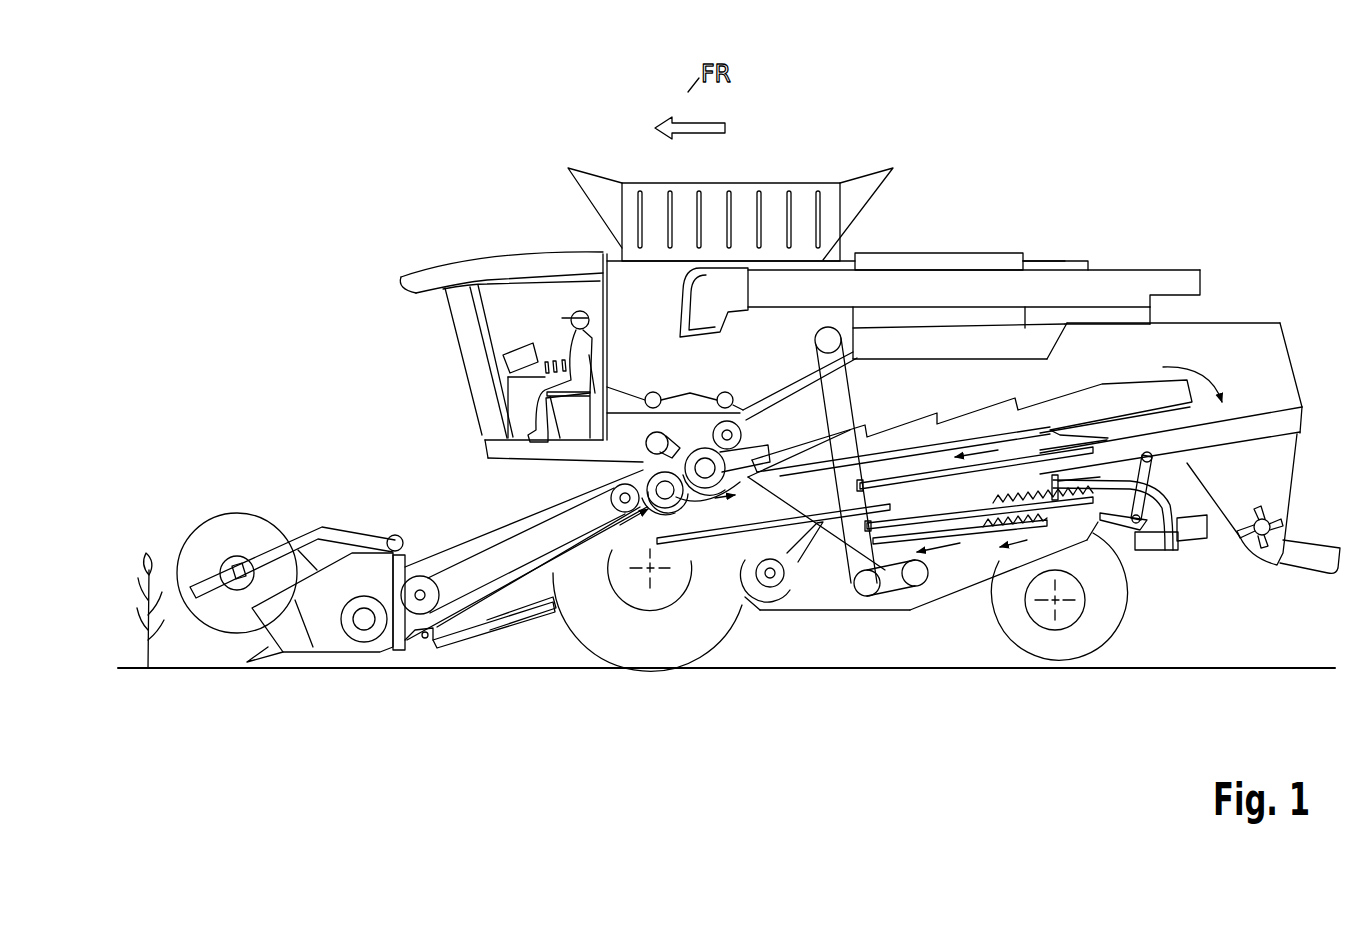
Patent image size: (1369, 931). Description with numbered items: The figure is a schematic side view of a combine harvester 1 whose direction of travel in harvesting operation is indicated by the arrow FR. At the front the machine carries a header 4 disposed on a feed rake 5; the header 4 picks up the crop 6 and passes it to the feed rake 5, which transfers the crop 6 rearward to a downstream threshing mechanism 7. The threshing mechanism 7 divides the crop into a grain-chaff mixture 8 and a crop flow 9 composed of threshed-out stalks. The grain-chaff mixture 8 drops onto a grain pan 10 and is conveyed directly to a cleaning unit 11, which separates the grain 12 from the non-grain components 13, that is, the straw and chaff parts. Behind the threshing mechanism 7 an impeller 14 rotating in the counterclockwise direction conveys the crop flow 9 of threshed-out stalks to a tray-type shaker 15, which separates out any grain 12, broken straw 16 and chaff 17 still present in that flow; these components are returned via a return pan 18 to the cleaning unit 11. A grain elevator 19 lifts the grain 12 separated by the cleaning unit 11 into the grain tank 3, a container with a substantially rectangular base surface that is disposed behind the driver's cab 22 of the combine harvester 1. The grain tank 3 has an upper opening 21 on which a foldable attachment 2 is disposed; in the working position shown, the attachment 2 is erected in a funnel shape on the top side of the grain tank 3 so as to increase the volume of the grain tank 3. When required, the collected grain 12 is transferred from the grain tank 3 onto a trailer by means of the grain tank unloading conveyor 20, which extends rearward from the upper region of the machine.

The combine harvester 1 is at (325, 350).
The foldable attachment 2 is at (912, 158).
The grain tank 3 is at (658, 367).
The header 4 is at (292, 512).
The feed rake 5 is at (447, 555).
The crop 6 is at (150, 556).
The threshing mechanism 7 is at (645, 465).
The grain-chaff mixture 8 is at (712, 521).
The crop flow 9 is at (772, 447).
The grain pan 10 is at (728, 528).
The cleaning unit 11 is at (908, 612).
The grain 12 is at (938, 560).
The non-grain components 13 is at (1010, 540).
The impeller 14 is at (742, 428).
The tray-type shaker 15 is at (1081, 400).
The broken straw 16 is at (985, 450).
The chaff 17 is at (868, 421).
The return pan 18 is at (1030, 457).
The grain elevator 19 is at (842, 600).
The grain tank unloading conveyor 20 is at (1152, 290).
The upper opening 21 is at (823, 262).
The driver's cab 22 is at (430, 268).